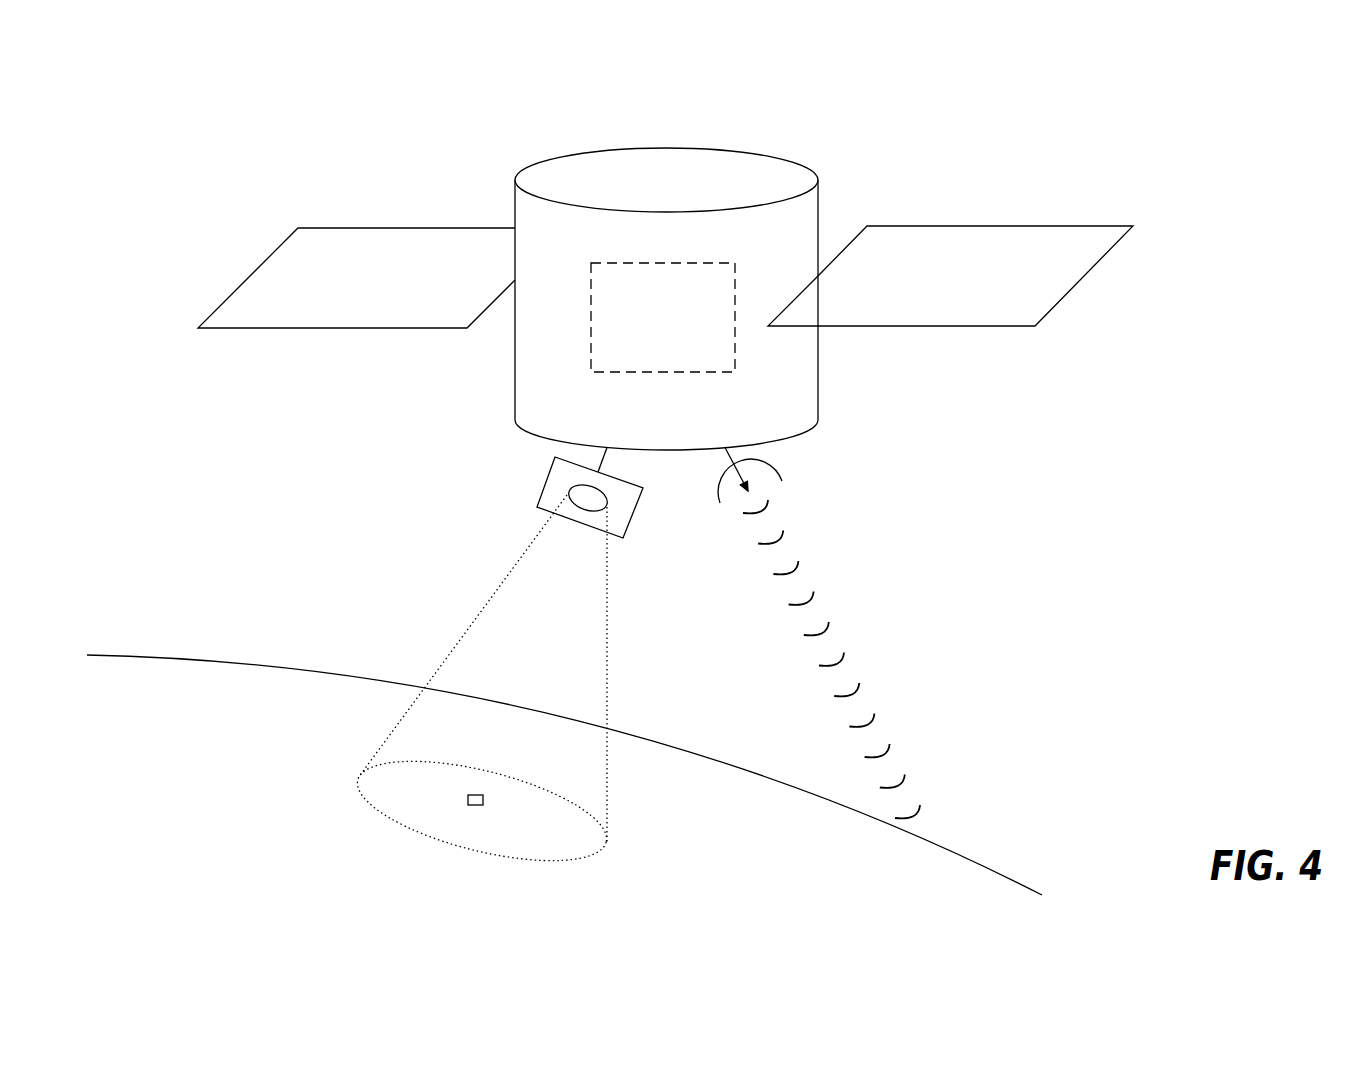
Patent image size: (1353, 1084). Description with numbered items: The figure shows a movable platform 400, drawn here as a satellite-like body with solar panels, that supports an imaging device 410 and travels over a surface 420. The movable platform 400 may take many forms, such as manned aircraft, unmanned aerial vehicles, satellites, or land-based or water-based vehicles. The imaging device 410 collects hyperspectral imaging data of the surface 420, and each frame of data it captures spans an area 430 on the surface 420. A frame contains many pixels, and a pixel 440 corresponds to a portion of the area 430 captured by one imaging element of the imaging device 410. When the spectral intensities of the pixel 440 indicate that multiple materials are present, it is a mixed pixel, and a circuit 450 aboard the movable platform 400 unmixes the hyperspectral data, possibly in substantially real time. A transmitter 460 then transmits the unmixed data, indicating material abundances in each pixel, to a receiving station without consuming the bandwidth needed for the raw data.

The movable platform 400 is at (181, 214).
The imaging device 410 is at (540, 498).
The surface 420 is at (145, 657).
The area 430 is at (488, 775).
The pixel 440 is at (468, 800).
The circuit 450 is at (682, 341).
The transmitter 460 is at (720, 497).